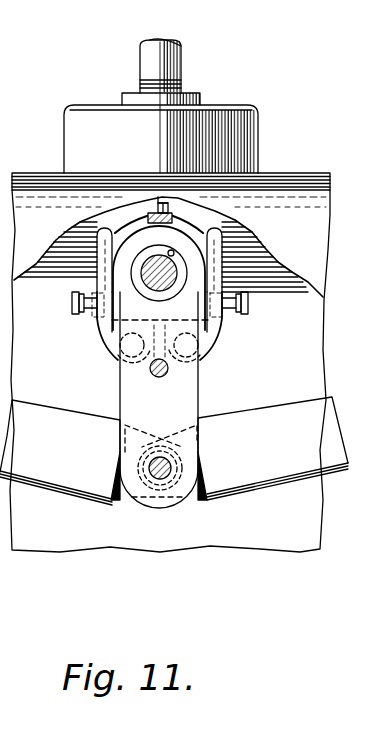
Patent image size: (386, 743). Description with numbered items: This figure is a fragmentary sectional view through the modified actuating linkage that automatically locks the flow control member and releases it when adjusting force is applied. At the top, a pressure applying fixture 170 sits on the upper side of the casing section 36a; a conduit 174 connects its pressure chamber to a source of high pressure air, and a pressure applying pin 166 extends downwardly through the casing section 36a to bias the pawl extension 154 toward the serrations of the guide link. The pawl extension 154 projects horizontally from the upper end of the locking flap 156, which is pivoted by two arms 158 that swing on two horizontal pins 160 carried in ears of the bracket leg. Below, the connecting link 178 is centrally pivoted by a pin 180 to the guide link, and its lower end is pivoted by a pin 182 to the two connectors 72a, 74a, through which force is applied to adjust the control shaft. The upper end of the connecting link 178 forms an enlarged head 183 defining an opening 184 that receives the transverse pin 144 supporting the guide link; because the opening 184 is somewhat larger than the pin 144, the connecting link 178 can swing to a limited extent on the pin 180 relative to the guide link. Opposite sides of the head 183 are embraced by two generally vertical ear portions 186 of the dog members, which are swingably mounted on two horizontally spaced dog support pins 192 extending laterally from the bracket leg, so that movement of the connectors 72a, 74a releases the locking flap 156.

The casing section 36a is at (330, 158).
The connector 72a is at (68, 466).
The connector 74a is at (284, 460).
The transverse pin 144 is at (160, 311).
The pawl extension 154 is at (169, 211).
The locking flap 156 is at (148, 219).
The arm 158 is at (100, 325).
The horizontal pin 160 is at (72, 303).
The pressure applying pin 166 is at (140, 200).
The pressure applying fixture 170 is at (63, 131).
The conduit 174 is at (157, 63).
The connecting link 178 is at (181, 407).
The pin 180 is at (152, 372).
The pin 182 is at (158, 482).
The enlarged head 183 is at (194, 286).
The opening 184 is at (159, 273).
The ear portion 186 is at (105, 246).
The dog support pin 192 is at (118, 358).